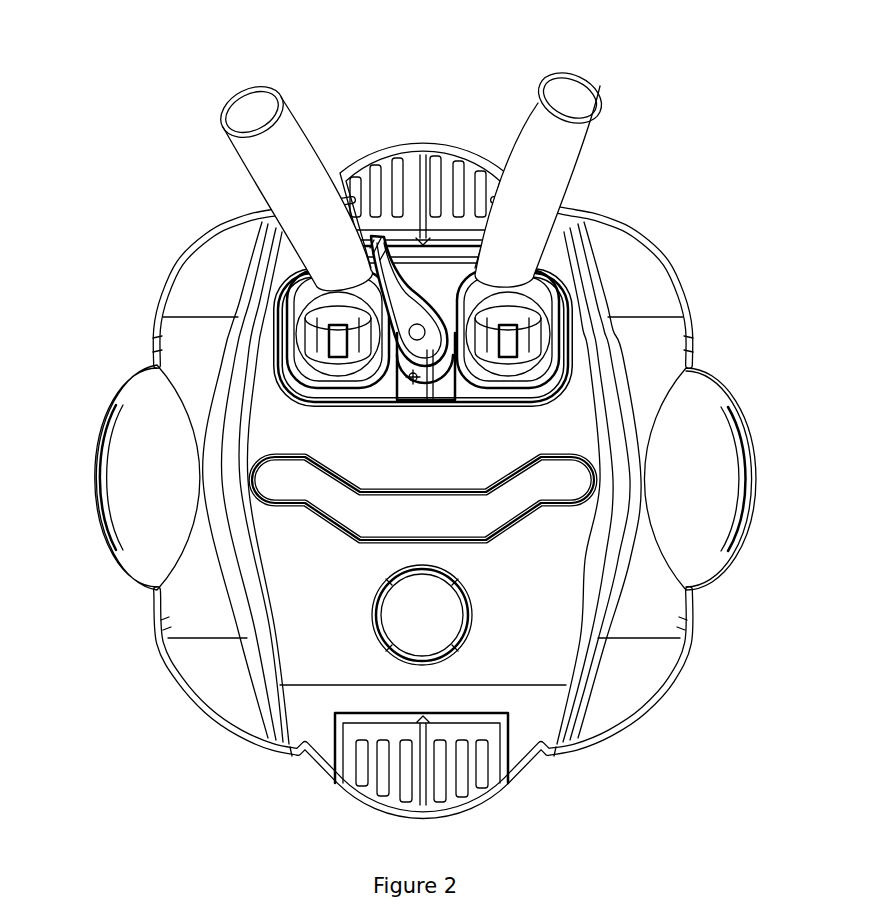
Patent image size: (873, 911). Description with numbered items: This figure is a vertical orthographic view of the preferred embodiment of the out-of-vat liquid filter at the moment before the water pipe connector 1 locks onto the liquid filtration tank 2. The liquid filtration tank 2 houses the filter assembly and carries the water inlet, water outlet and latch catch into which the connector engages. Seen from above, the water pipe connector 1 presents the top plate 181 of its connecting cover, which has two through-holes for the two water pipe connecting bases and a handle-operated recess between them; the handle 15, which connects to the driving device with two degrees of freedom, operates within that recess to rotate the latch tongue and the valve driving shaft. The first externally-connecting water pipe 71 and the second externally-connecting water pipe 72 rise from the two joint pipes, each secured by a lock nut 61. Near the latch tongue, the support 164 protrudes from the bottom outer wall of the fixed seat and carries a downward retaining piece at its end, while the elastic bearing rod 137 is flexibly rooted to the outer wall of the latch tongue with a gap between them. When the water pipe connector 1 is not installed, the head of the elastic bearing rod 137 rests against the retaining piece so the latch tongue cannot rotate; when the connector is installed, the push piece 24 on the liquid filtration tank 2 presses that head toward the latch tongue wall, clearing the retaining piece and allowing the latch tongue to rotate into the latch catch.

The water pipe connector 1 is at (267, 403).
The liquid filtration tank 2 is at (372, 568).
The handle 15 is at (398, 300).
The push piece 24 is at (440, 408).
The lock nut 61 is at (338, 342).
The first externally-connecting water pipe 71 is at (278, 155).
The second externally-connecting water pipe 72 is at (547, 140).
The elastic bearing rod 137 is at (462, 385).
The support 164 is at (405, 398).
The top plate 181 is at (540, 380).